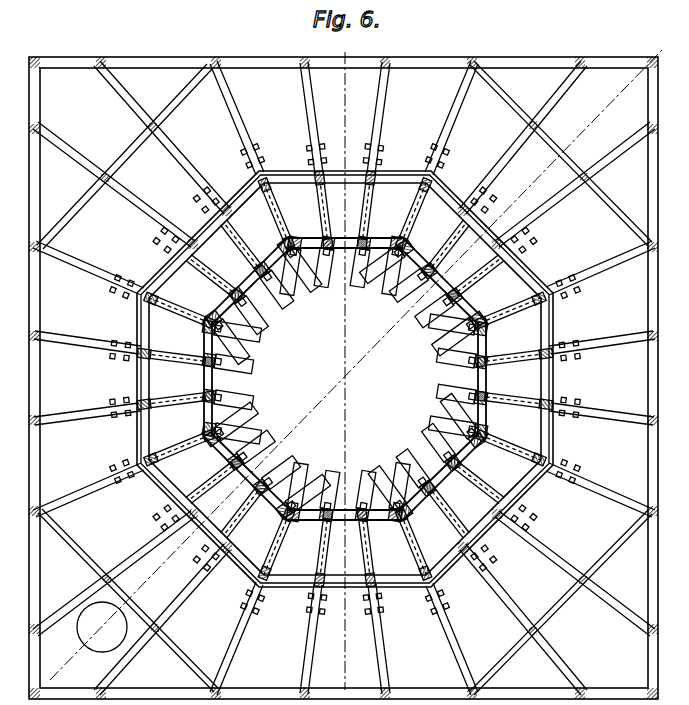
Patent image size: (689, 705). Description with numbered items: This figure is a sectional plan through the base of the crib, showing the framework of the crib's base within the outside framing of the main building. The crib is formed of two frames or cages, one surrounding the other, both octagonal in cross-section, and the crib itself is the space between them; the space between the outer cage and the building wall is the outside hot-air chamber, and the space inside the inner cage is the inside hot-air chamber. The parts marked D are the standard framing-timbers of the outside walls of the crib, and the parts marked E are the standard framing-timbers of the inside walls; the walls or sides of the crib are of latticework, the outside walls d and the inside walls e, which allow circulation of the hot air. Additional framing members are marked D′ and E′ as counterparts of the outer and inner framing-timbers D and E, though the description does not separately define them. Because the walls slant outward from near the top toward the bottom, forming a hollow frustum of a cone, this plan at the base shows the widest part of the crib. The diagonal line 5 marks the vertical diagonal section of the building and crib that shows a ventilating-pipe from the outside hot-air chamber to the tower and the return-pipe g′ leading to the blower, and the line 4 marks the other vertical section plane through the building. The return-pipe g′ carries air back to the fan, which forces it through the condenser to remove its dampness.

The outside walls d is at (396, 180).
The inside walls e is at (277, 250).
The standard framing-timbers of the inside walls E is at (345, 255).
The hanging bar E′ is at (308, 247).
The standard framing-timbers of the outside walls D is at (300, 150).
The bolted connection plate at vertex beam D′ is at (443, 186).
The section line 4- 4 is at (348, 52).
The section line 5 5 is at (97, 689).
The return-pipe g′ is at (102, 627).